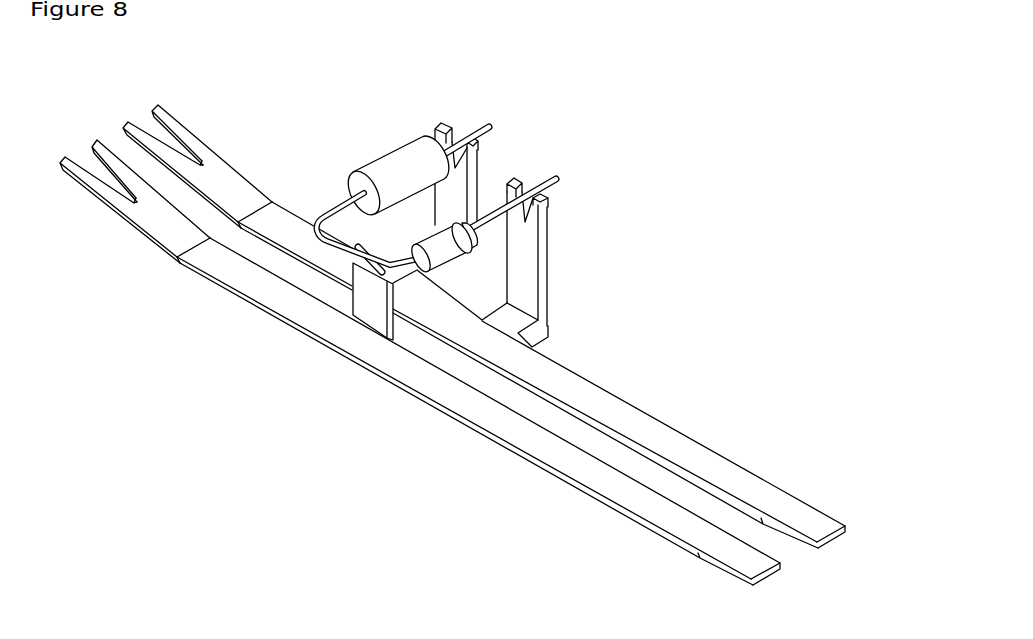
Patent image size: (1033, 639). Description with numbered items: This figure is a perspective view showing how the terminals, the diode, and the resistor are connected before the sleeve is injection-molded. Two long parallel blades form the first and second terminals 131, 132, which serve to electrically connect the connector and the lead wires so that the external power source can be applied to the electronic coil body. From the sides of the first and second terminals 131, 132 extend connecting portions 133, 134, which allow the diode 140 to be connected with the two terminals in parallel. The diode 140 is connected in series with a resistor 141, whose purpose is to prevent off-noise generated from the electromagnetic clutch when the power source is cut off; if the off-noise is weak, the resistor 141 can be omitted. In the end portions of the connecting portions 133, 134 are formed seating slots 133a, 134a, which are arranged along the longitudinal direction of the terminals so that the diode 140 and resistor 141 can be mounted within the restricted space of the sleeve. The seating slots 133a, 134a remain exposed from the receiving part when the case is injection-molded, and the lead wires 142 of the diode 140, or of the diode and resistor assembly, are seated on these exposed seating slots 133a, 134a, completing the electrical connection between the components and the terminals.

The first terminal 131 is at (680, 448).
The second terminal 132 is at (670, 512).
The connecting portion 133 is at (530, 247).
The seating slot 133a is at (533, 218).
The connecting portion 134 is at (458, 180).
The seating slot 134a is at (450, 127).
The diode 140 is at (450, 250).
The resistor 141 is at (383, 167).
The lead wires 142 is at (476, 122).